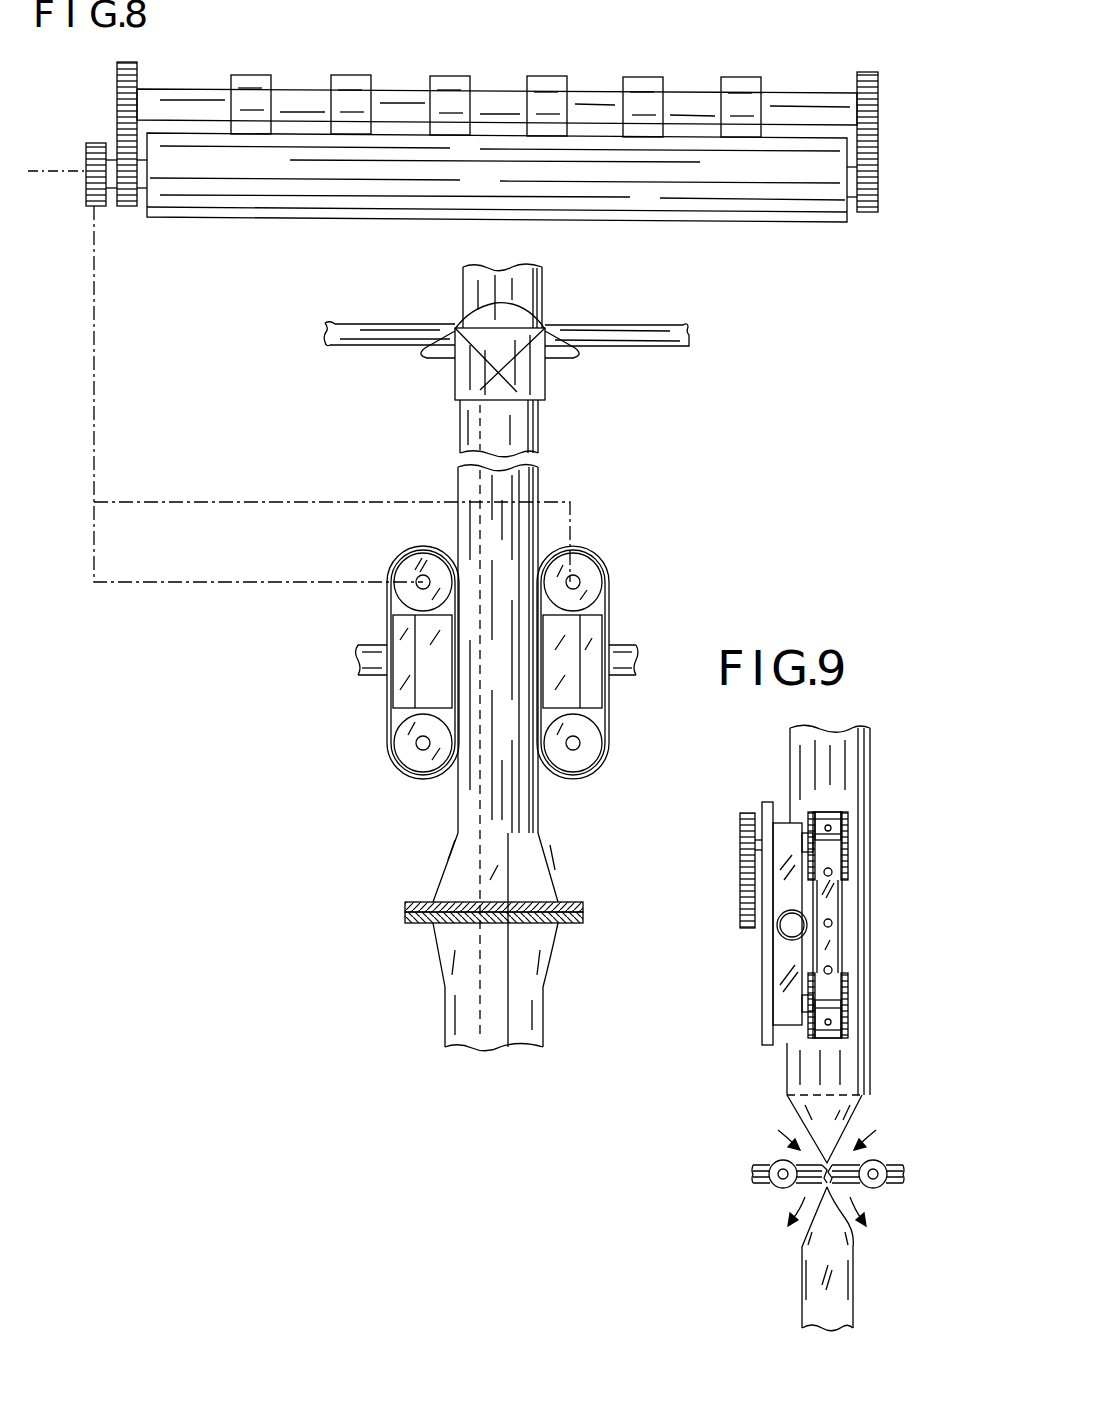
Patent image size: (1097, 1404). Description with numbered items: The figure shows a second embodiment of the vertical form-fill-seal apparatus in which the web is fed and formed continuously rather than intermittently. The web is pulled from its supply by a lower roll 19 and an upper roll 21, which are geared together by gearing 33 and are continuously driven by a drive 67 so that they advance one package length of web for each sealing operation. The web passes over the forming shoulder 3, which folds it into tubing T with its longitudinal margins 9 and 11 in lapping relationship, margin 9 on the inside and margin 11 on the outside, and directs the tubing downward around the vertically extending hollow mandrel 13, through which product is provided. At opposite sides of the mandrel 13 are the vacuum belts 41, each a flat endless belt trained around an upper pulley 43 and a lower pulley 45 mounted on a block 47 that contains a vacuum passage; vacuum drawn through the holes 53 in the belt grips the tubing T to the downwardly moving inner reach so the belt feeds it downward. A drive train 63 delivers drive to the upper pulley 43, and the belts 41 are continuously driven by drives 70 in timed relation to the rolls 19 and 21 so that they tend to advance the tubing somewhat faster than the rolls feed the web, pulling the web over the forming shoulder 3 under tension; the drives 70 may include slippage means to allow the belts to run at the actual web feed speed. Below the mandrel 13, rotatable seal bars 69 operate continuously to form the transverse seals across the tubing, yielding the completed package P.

In FIG. 8, the forming shoulder 3 is at (457, 329).
In FIG. 8, the longitudinal margin 9 is at (485, 440).
In FIG. 8, the longitudinal margin 11 is at (505, 438).
In FIG. 8, the mandrel 13 is at (543, 292).
In FIG. 9, the mandrel 13 is at (862, 1108).
In FIG. 8, the lower roll 19 is at (200, 220).
In FIG. 8, the upper roll 21 is at (245, 76).
In FIG. 8, the gearing 33 is at (128, 207).
In FIG. 8, the vacuum belt 41 is at (387, 628).
In FIG. 9, the vacuum belt 41 is at (835, 895).
In FIG. 8, the upper pulley 43 is at (408, 572).
In FIG. 9, the upper pulley 43 is at (845, 828).
In FIG. 8, the lower pulley 45 is at (405, 748).
In FIG. 9, the lower pulley 45 is at (845, 1017).
In FIG. 9, the block 47 is at (785, 955).
In FIG. 9, the holes 53 is at (832, 923).
In FIG. 9, the drive train 63 is at (740, 868).
In FIG. 8, the drive 67 is at (30, 180).
In FIG. 8, the seal bars 69 is at (583, 905).
In FIG. 9, the seal bars 69 is at (798, 1188).
In FIG. 8, the drives 70 is at (94, 462).
In FIG. 8, the tubing T is at (540, 488).
In FIG. 8, the package P is at (445, 1025).
In FIG. 9, the package P is at (803, 1287).